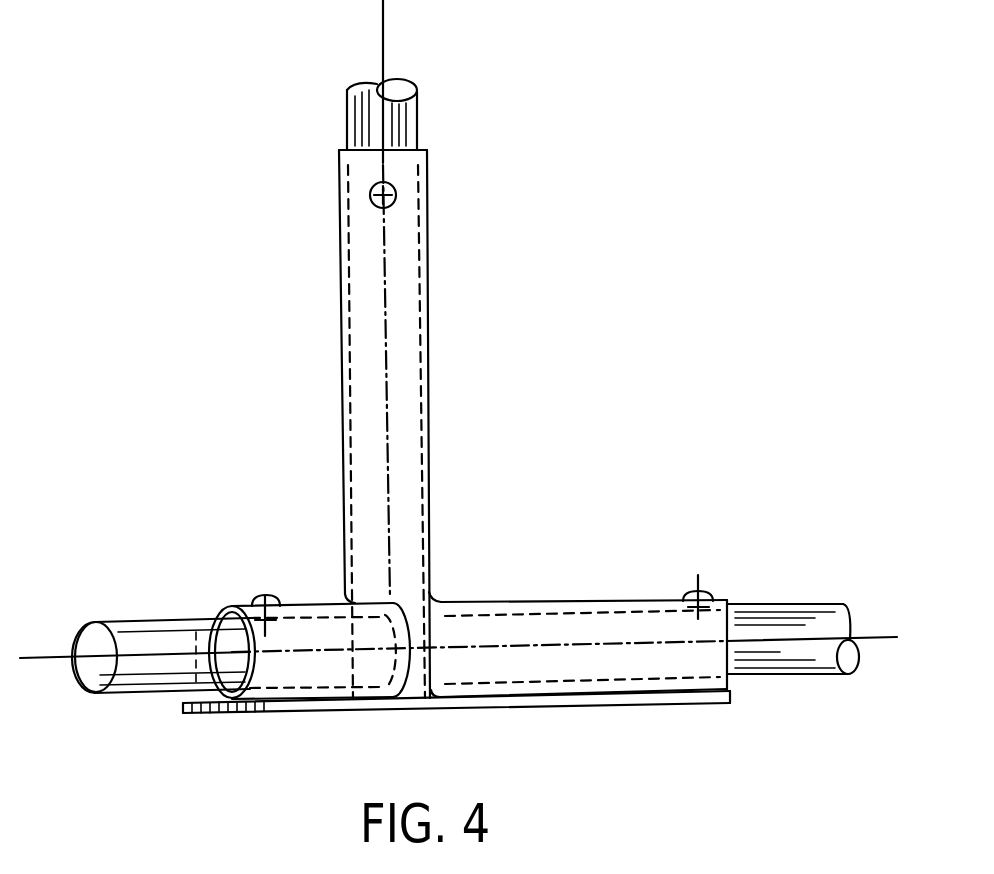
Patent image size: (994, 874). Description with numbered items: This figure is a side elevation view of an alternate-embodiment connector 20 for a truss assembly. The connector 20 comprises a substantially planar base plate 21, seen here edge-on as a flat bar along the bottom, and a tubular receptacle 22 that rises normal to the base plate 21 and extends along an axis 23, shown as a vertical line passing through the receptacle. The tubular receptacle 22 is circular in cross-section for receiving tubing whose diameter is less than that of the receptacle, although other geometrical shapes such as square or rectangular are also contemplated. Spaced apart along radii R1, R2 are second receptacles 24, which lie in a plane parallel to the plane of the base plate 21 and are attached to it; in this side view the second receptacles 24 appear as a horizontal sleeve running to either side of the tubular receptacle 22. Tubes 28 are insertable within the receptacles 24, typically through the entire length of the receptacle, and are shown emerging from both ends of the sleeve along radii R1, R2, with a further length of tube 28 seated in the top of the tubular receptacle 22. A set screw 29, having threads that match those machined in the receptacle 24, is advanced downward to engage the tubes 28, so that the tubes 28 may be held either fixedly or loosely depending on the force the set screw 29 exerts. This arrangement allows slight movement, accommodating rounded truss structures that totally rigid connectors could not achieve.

The connector 20 is at (480, 453).
The base plate 21 is at (328, 706).
The tubular receptacle 22 is at (428, 366).
The axis 23 is at (383, 42).
The second receptacles 24 is at (560, 600).
The tubes 28 is at (417, 120).
The set screw 29 is at (396, 200).
The radius R1 is at (62, 660).
The radius R2 is at (872, 641).